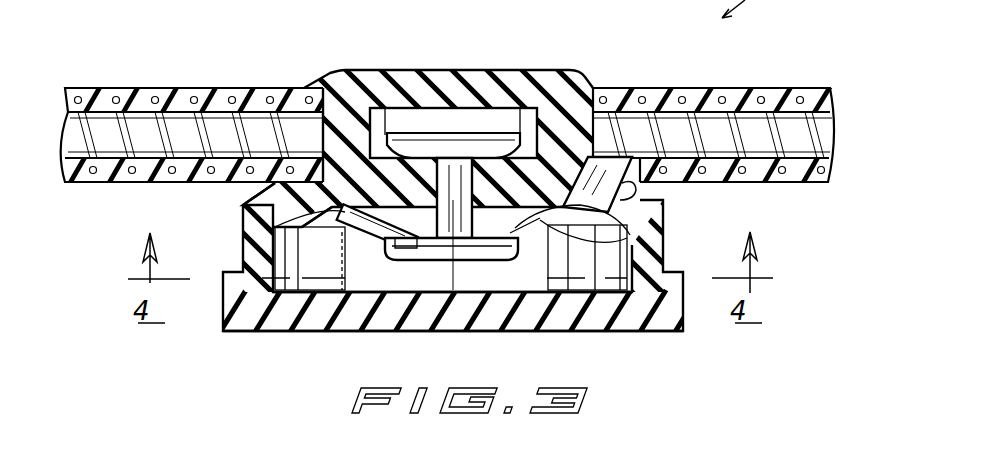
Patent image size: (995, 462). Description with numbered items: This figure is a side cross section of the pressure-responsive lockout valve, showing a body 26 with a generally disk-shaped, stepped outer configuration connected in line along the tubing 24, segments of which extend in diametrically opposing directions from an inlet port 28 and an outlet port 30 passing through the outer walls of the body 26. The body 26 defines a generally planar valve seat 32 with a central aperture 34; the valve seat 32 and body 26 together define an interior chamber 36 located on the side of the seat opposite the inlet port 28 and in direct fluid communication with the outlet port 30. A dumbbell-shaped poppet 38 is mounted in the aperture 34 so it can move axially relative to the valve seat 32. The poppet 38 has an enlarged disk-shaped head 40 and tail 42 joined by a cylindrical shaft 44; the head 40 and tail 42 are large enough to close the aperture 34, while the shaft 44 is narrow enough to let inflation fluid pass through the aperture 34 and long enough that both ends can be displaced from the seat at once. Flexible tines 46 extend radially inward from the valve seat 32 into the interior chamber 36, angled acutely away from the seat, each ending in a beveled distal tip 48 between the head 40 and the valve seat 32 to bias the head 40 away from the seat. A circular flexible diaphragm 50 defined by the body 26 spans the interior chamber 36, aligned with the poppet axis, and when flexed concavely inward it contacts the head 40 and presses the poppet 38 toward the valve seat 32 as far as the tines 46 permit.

The tubing 24 is at (128, 88).
The body 26 is at (563, 80).
The inlet port 28 is at (299, 95).
The outlet port 30 is at (660, 203).
The valve seat 32 is at (270, 200).
The central aperture 34 is at (435, 130).
The interior chamber 36 is at (495, 262).
The poppet 38 is at (413, 127).
The head 40 is at (537, 262).
The tail 42 is at (457, 143).
The shaft 44 is at (453, 290).
The flexible tines 46 is at (275, 243).
The distal tip 48 is at (392, 240).
The flexible diaphragm 50 is at (307, 323).